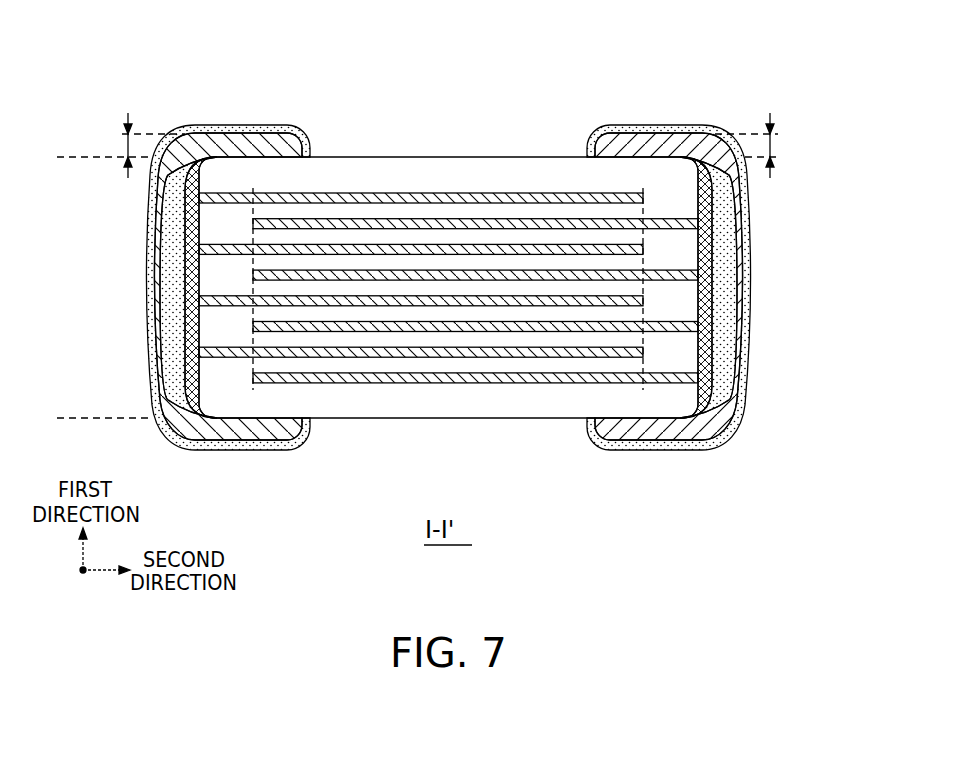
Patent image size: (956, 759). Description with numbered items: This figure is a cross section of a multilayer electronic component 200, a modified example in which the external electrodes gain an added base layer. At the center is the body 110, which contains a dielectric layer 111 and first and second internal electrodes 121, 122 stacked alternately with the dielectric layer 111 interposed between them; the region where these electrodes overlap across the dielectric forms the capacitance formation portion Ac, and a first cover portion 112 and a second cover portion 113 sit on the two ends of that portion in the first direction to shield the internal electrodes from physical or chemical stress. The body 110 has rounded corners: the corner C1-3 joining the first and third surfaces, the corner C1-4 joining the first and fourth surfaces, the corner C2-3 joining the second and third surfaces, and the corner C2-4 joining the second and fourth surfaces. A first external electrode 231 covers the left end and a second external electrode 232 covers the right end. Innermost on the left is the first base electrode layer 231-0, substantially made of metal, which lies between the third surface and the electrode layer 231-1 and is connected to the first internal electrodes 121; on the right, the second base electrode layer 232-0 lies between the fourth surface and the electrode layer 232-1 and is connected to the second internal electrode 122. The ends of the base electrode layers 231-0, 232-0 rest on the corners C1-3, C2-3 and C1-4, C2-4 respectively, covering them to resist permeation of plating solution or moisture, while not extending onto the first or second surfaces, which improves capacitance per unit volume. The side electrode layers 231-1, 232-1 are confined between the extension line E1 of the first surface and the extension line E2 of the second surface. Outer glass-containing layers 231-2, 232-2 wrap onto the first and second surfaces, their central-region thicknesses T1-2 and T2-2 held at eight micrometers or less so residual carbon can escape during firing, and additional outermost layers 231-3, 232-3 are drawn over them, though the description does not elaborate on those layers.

The multilayer electronic component 200 is at (168, 49).
The body 110 is at (405, 157).
The dielectric layer 111 is at (345, 213).
The first cover portion 112 is at (460, 170).
The second cover portion 113 is at (452, 400).
The first internal electrode 121 is at (510, 193).
The second internal electrode 122 is at (567, 220).
The capacitance formation portion Ac is at (545, 383).
The first external electrode 231 is at (157, 287).
The first base electrode layer 231-0 is at (185, 288).
The 1-1-th electrode layer 231-1 is at (172, 318).
The first plating layer 231-2 is at (162, 356).
The first outer plating layer 231-3 is at (155, 400).
The second external electrode 232 is at (744, 287).
The second base electrode layer 232-0 is at (714, 333).
The 2-1-th electrode layer 232-1 is at (724, 357).
The second plating layer 232-2 is at (737, 410).
The second outer plating layer 232-3 is at (726, 437).
The 1-3-th corner C1-3 is at (275, 172).
The 1-4-th corner C1-4 is at (645, 170).
The 2-3-th corner C2-3 is at (258, 400).
The 2-4-th corner C2-4 is at (637, 398).
The extension line of the first surface E1 is at (89, 158).
The extension line of the second surface E2 is at (89, 419).
The thickness of the central region of the 1-2-th electrode layer T1-2 is at (133, 145).
The thickness of the central region of the 2-2-th electrode layer T2-2 is at (769, 145).